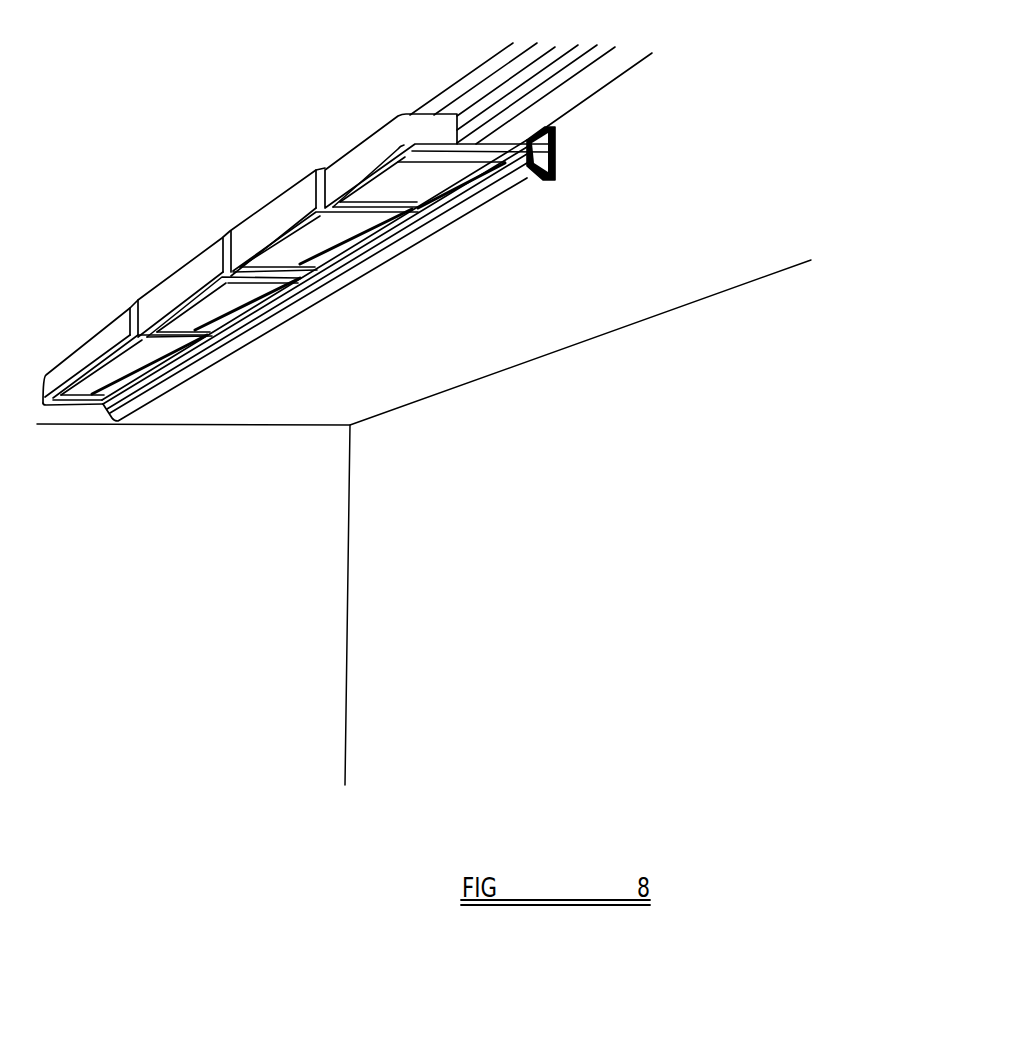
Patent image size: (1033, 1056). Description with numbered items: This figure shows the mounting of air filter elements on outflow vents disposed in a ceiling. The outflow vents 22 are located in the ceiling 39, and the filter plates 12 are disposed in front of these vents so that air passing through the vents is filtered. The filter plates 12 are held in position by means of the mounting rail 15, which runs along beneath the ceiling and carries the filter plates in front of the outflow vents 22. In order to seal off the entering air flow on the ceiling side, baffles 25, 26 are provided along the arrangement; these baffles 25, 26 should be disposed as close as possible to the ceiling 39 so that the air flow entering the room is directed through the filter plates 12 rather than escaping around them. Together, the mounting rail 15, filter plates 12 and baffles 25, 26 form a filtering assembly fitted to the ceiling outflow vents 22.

The filter plates 12 is at (413, 218).
The mounting rail 15 is at (498, 193).
The outflow vents 22 is at (550, 77).
The baffles 25 is at (271, 223).
The baffles 26 is at (364, 162).
The ceiling 39 is at (561, 172).